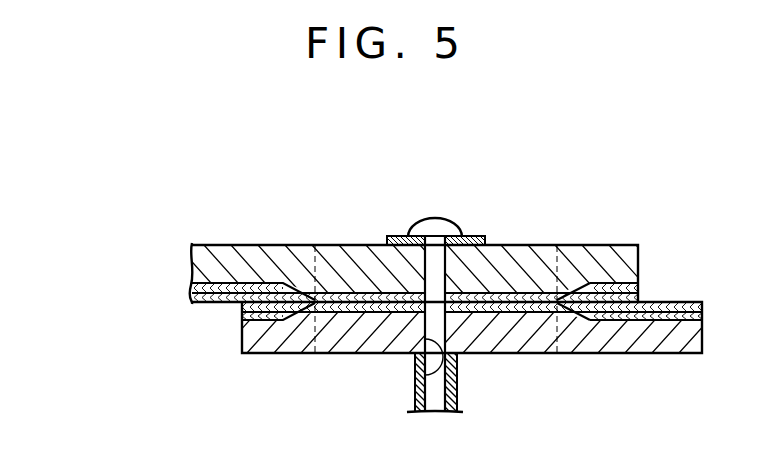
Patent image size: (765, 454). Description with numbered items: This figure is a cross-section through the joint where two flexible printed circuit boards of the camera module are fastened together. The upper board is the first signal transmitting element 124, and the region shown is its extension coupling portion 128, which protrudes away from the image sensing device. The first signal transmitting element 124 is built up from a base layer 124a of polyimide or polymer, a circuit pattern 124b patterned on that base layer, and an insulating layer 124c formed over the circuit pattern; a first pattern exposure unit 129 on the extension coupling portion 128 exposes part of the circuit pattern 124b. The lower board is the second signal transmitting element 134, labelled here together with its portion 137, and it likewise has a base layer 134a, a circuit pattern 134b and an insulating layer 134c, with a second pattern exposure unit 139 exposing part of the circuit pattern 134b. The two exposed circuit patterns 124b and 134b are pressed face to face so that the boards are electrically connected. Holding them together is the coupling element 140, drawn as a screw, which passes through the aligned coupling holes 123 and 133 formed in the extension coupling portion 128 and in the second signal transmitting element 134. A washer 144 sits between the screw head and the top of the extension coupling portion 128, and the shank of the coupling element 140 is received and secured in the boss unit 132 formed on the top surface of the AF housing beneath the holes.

The first signal transmitting element 124 is at (108, 236).
The extension coupling portion 128 is at (320, 271).
The base layer 124a is at (196, 257).
The circuit pattern 124b is at (196, 288).
The insulating layer 124c is at (196, 297).
The first pattern exposure unit 129 is at (332, 255).
The second signal transmitting element 134 is at (145, 323).
The second member 137 is at (367, 351).
The base layer 134a is at (243, 340).
The circuit pattern 134b is at (243, 318).
The insulating layer 134c is at (242, 306).
The second pattern exposure unit 139 is at (347, 337).
The coupling element 140 is at (438, 226).
The washer 144 is at (480, 236).
The coupling hole 123 is at (408, 262).
The coupling hole 133 is at (425, 375).
The boss unit 132 is at (457, 389).